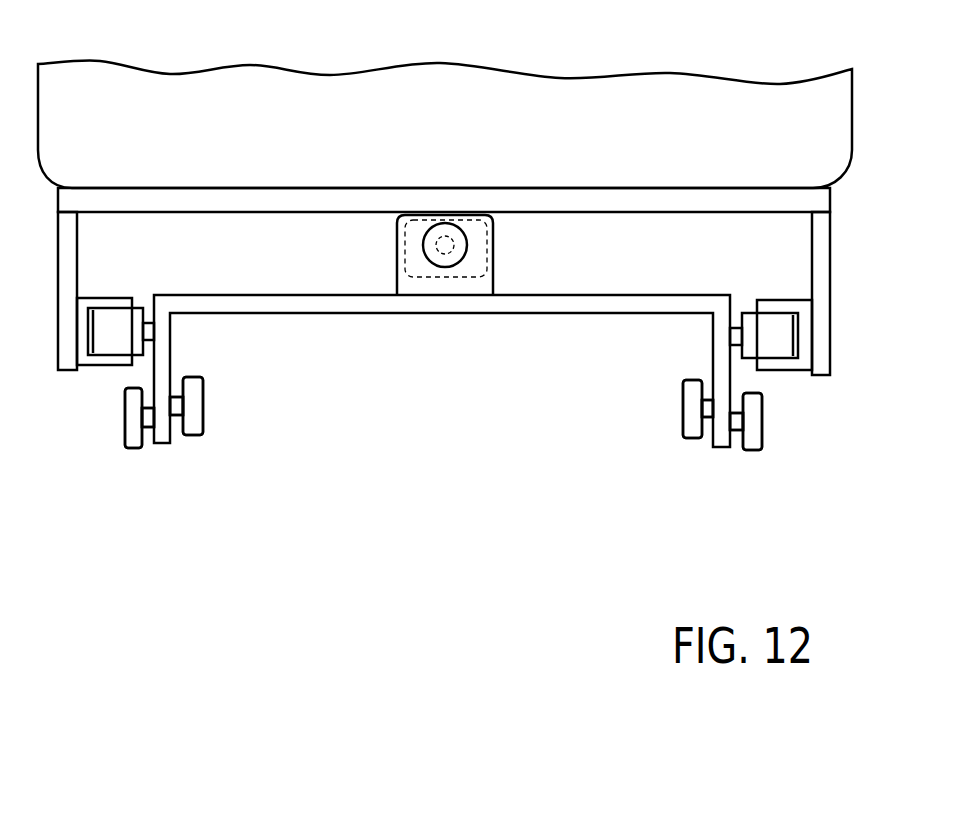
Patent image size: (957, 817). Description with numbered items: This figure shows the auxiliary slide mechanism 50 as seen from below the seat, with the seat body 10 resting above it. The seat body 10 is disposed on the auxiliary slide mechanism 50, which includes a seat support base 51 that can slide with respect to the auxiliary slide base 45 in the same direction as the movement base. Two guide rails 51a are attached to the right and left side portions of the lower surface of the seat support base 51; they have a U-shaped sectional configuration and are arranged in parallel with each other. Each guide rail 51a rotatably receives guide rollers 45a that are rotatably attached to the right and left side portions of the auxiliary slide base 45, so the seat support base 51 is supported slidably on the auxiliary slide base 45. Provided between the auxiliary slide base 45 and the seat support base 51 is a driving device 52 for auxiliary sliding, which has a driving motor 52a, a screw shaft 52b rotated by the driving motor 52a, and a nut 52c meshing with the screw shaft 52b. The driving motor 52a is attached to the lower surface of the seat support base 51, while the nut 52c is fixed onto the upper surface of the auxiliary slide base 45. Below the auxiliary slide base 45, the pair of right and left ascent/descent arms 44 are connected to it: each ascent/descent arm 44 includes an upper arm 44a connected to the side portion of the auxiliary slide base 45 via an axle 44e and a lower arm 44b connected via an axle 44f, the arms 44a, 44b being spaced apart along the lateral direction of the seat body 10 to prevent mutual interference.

The seat body 10 is at (808, 112).
The ascent/descent arm 44 is at (220, 438).
The upper arm 44a is at (132, 432).
The lower arm 44b is at (193, 427).
The axle 44e is at (148, 420).
The axle 44f is at (178, 413).
The auxiliary slide base 45 is at (377, 313).
The guide roller 45a is at (110, 340).
The auxiliary slide mechanism 50 is at (51, 382).
The seat support base 51 is at (622, 205).
The guide rail 51a is at (103, 303).
The driving device for auxiliary sliding 52 is at (440, 296).
The driving motor 52a is at (428, 215).
The screw shaft 52b is at (447, 240).
The nut 52c is at (477, 285).